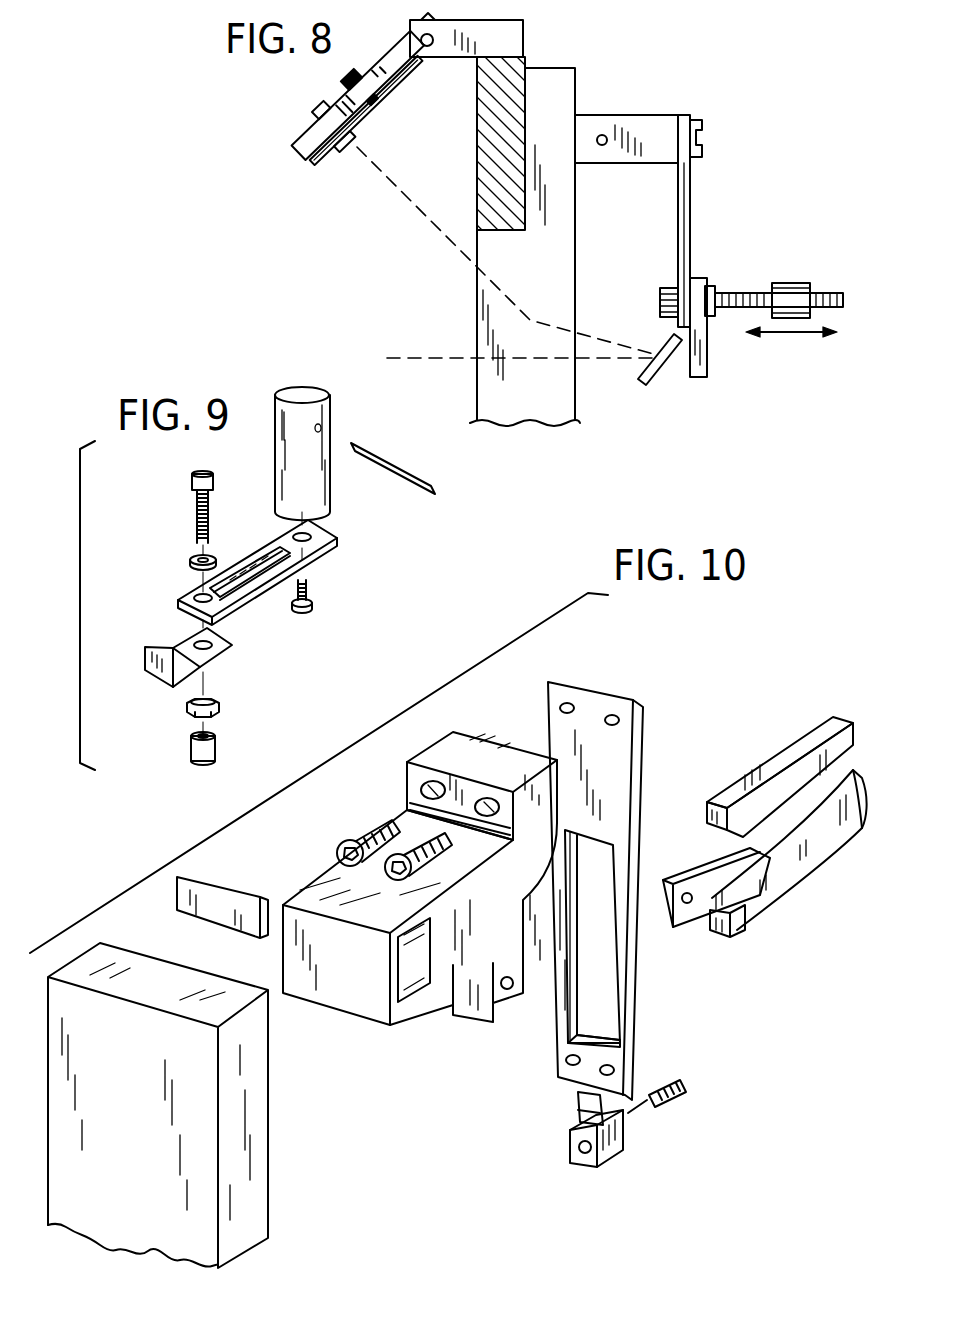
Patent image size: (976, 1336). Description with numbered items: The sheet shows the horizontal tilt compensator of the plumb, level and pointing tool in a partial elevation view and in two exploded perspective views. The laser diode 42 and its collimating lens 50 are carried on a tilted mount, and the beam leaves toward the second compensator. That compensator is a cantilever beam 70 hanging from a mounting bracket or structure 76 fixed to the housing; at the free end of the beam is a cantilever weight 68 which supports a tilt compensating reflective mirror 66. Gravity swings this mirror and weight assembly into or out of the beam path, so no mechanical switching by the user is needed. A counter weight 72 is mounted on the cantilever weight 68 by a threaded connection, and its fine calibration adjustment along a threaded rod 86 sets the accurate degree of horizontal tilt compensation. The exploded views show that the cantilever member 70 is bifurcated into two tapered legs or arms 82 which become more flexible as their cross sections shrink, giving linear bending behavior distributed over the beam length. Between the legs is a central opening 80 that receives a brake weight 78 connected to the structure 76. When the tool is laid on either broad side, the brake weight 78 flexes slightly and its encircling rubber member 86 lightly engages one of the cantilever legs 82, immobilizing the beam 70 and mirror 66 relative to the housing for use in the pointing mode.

In FIG. 8, the visible laser diode 42 is at (286, 118).
In FIG. 8, the collimating lens 50 is at (350, 157).
In FIG. 8, the second tilt compensating reflective mirror 66 is at (643, 373).
In FIG. 10, the second tilt compensating reflective mirror 66 is at (580, 1107).
In FIG. 8, the cantilever weight 68 is at (683, 380).
In FIG. 9, the cantilever weight 68 is at (150, 665).
In FIG. 10, the cantilever weight 68 is at (615, 1137).
In FIG. 8, the cantilever beam 70 is at (690, 207).
In FIG. 9, the cantilever beam 70 is at (267, 587).
In FIG. 10, the cantilever beam 70 is at (650, 971).
In FIG. 8, the counter weight 72 is at (787, 282).
In FIG. 9, the counter weight 72 is at (191, 747).
In FIG. 8, the mounting bracket 76 is at (637, 115).
In FIG. 9, the mounting bracket 76 is at (332, 478).
In FIG. 10, the mounting bracket 76 is at (477, 760).
In FIG. 10, the brake weight 78 is at (777, 912).
In FIG. 10, the central opening 80 is at (590, 1037).
In FIG. 10, the cantilever beam arms 82 is at (623, 1003).
In FIG. 8, the threaded rod 86 is at (822, 287).
In FIG. 9, the threaded rod 86 is at (192, 505).
In FIG. 10, the threaded rod 86 is at (810, 847).